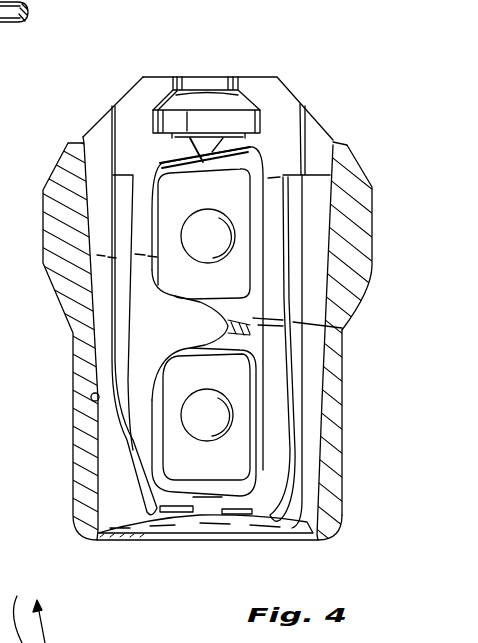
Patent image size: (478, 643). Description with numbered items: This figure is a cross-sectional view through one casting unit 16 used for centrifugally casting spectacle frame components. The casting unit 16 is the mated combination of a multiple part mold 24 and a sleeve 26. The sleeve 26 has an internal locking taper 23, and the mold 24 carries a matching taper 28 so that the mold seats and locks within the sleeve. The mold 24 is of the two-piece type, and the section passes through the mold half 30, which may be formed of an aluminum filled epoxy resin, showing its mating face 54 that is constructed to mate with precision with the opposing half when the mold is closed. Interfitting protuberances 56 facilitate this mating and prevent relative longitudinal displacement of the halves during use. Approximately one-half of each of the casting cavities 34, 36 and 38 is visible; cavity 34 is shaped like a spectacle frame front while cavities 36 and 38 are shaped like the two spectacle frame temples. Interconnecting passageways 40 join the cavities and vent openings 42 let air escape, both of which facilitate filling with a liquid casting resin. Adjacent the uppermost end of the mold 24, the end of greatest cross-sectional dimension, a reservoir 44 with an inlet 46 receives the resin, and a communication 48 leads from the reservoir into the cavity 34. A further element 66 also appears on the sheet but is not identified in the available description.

The casting unit 16 is at (357, 177).
The internal locking taper 23 is at (90, 397).
The multiple part mold 24 is at (283, 83).
The sleeve 26 is at (43, 212).
The matching taper 28 is at (358, 395).
The mold half 30 is at (140, 102).
The casting cavity 34 is at (241, 161).
The casting cavity 36 is at (110, 300).
The casting cavity 38 is at (342, 328).
The interconnecting passageways 40 is at (233, 515).
The vent openings 42 is at (112, 113).
The reservoir 44 is at (163, 77).
The inlet 46 is at (228, 76).
The communication 48 is at (197, 147).
The face 54 is at (300, 452).
The interfitting protuberances 56 is at (193, 400).
The lead 66 is at (45, 623).